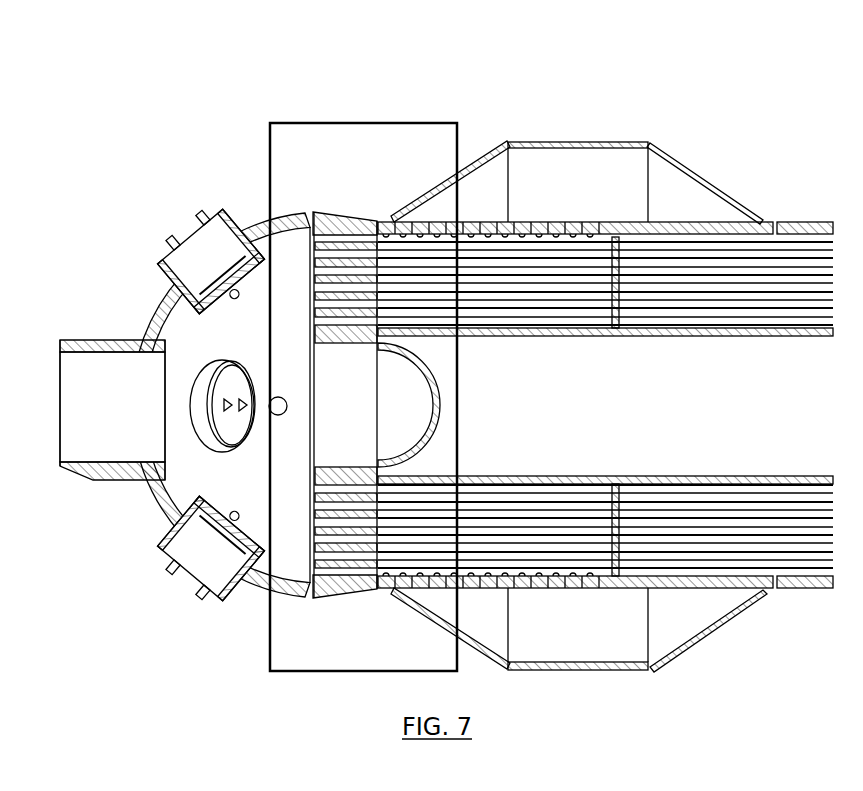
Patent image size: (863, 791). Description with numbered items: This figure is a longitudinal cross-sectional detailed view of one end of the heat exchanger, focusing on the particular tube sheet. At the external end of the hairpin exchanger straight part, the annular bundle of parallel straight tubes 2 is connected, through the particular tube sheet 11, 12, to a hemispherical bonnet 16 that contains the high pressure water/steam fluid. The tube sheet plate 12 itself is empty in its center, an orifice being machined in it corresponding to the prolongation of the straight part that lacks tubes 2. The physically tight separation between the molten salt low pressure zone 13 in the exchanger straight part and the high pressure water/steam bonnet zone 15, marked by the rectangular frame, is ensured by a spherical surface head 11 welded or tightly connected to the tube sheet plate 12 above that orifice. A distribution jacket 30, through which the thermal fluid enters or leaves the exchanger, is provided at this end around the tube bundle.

The parallel straight tubes 2 is at (715, 272).
The spherical surface head 11 is at (437, 398).
The tube sheet plate 12 is at (338, 217).
The molten salt low pressure zone 13 is at (418, 273).
The high pressure water/steam bonnet zone 15 is at (295, 367).
The spherical bonnet 16 is at (255, 217).
The distribution jacket 30 is at (672, 153).